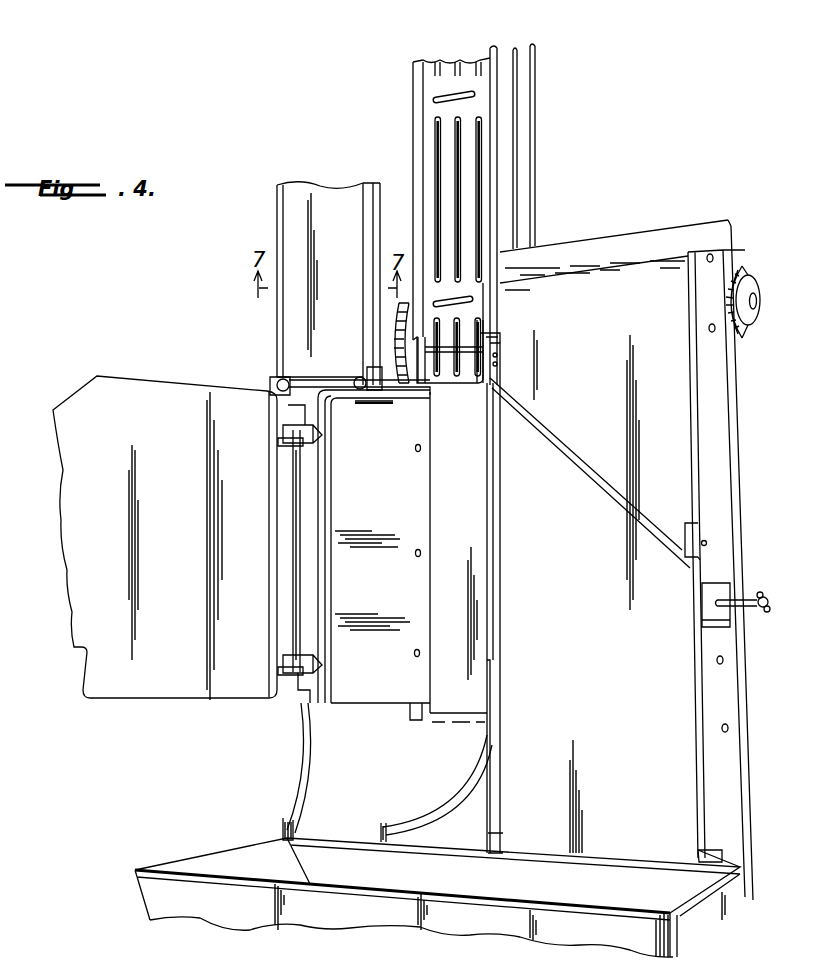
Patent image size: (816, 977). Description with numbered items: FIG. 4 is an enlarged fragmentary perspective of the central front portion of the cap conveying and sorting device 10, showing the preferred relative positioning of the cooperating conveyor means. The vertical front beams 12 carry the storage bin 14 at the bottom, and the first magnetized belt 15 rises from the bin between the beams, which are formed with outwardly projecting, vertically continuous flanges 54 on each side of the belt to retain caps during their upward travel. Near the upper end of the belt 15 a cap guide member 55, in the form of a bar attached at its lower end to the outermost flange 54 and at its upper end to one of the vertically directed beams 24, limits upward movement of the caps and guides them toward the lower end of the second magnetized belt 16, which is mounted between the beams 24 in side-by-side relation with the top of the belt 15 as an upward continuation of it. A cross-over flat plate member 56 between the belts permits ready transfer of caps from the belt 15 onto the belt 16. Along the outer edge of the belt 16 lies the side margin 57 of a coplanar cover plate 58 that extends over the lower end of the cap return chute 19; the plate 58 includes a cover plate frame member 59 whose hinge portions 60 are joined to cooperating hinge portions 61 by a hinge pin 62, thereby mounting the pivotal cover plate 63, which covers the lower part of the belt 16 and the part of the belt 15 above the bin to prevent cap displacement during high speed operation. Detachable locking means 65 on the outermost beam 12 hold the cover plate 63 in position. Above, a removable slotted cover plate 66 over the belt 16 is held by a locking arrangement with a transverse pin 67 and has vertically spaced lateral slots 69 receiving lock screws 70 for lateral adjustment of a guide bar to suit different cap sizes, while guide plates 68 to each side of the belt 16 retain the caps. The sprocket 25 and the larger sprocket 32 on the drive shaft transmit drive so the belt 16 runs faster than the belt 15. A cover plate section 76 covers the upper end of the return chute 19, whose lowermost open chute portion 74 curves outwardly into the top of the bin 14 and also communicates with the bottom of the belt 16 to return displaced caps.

The cap conveying and sorting device 10 is at (231, 321).
The front beams 12 is at (742, 673).
The bin 14 is at (135, 872).
The belt 15 is at (615, 678).
The belt 16 is at (467, 538).
The cap return chute means 19 is at (278, 243).
The vertically directed beams 24 is at (526, 134).
The sprocket 25 is at (745, 272).
The sprocket 32 is at (399, 340).
The flanges 54 is at (500, 770).
The cap guide member 55 is at (607, 492).
The cross-over flat plate member 56 is at (496, 530).
The side margin 57 is at (432, 487).
The cover plate 58 is at (384, 520).
The cover plate frame member 59 is at (329, 468).
The hinge portions 60 is at (318, 436).
The cooperating hinge portions 61 is at (283, 443).
The hinge pin 62 is at (292, 530).
The pivotal cover plate 63 is at (75, 580).
The detachable locking means 65 is at (750, 601).
The removable cover plate 66 is at (481, 106).
The transverse pin 67 is at (441, 373).
The guide plates 68 is at (414, 158).
The lateral slots 69 is at (452, 96).
The lock screws 70 is at (436, 98).
The open chute portion 74 is at (315, 787).
The cover plate section 76 is at (292, 347).